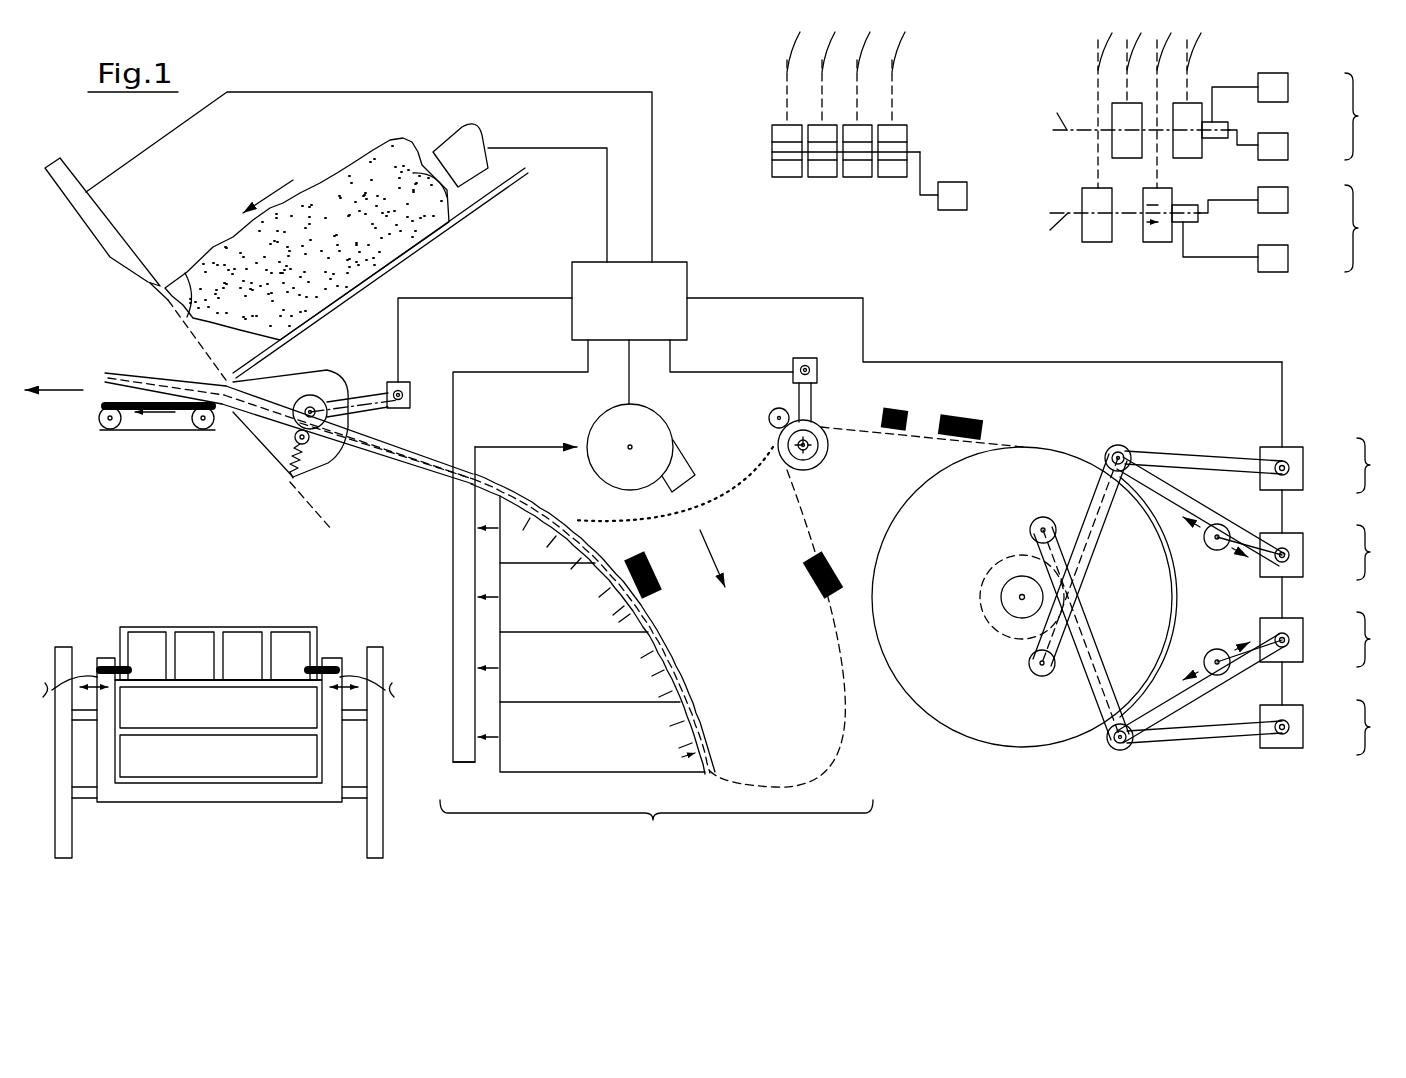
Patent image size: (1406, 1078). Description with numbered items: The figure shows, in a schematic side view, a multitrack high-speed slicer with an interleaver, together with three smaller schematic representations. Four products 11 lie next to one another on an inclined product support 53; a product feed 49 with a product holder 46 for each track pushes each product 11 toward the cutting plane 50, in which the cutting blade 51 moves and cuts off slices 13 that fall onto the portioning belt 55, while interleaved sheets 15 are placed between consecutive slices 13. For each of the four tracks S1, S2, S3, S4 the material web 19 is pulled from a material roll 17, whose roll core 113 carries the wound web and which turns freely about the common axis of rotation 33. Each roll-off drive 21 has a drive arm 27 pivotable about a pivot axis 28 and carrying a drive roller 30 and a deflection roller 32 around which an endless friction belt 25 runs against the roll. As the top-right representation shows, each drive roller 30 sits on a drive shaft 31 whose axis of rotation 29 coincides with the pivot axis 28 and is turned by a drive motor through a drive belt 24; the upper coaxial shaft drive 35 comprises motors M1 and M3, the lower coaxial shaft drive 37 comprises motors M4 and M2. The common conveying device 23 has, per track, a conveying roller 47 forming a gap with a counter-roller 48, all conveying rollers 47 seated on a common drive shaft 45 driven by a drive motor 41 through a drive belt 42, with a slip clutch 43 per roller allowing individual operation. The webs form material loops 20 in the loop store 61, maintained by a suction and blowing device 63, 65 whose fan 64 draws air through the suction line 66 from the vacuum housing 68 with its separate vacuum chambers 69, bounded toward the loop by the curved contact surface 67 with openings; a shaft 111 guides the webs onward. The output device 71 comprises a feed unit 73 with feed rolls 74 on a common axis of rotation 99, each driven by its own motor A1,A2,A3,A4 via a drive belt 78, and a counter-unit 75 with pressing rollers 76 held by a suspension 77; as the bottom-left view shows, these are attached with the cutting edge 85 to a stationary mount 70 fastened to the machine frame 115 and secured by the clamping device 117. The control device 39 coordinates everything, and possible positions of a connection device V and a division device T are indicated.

The product 11 is at (337, 197).
The slice 13 is at (107, 373).
The interleaved sheet 15 is at (103, 385).
The material roll 17 is at (1022, 597).
The material web 19 is at (605, 574).
The material loop 20 is at (727, 497).
The roll-off drive 21 is at (1327, 414).
The conveying device 23 is at (737, 105).
The drive belt 24 is at (1185, 497).
The endless belt 25 is at (1152, 597).
The drive arm 27 is at (1105, 549).
The pivot axis 28 is at (1111, 422).
The axis of rotation 29 is at (1111, 422).
The drive roller 30 is at (1127, 455).
The drive shaft 31 is at (1122, 212).
The deflection roller 32 is at (1030, 530).
The axis of rotation 33 is at (1015, 605).
The coaxial shaft drive 35 is at (1365, 116).
The coaxial shaft drive 37 is at (1365, 228).
The control device 39 is at (640, 315).
The drive motor 41 is at (793, 363).
The drive belt 42 is at (797, 398).
The slip clutch 43 is at (803, 457).
The drive shaft 45 is at (813, 453).
The product holder 46 is at (455, 153).
The conveying roller 47 is at (844, 311).
The counter-roller 48 is at (768, 420).
The product feed 49 is at (483, 122).
The cutting plane 50 is at (322, 517).
The cutting blade 51 is at (65, 178).
The product support 53 is at (500, 190).
The portioning belt 55 is at (155, 443).
The loop store 61 is at (656, 827).
The suction and blowing device 63 is at (430, 540).
The fan 64 is at (593, 417).
The suction and blowing device 65 is at (707, 467).
The suction line 66 is at (495, 443).
The contact surface 67 is at (653, 607).
The vacuum housing 68 is at (497, 768).
The vacuum chamber 69 is at (535, 559).
The mount 70 is at (138, 797).
The output device 71 is at (240, 458).
The feed unit 73 is at (330, 385).
The feed roll 74 is at (362, 337).
The counter-unit 75 is at (273, 455).
The pressing roller 76 is at (312, 442).
The suspension 77 is at (292, 480).
The drive belt 78 is at (377, 408).
The cutting edge 85 is at (185, 273).
The axis of rotation 99 is at (311, 405).
The shaft 111 is at (423, 473).
The roll core 113 is at (1008, 594).
The machine frame 115 is at (373, 820).
The clamping device 117 is at (97, 662).
The drive motor M1 is at (1305, 468).
The drive motor M2 is at (1305, 727).
The drive motor M3 is at (1305, 555).
The drive motor M4 is at (1305, 640).
The track S1 is at (158, 674).
The track S2 is at (206, 674).
The track S3 is at (254, 674).
The track S4 is at (303, 674).
The division device T is at (903, 410).
The connection device V is at (978, 420).
The drive motors A1,A2,A3,A4 is at (466, 392).